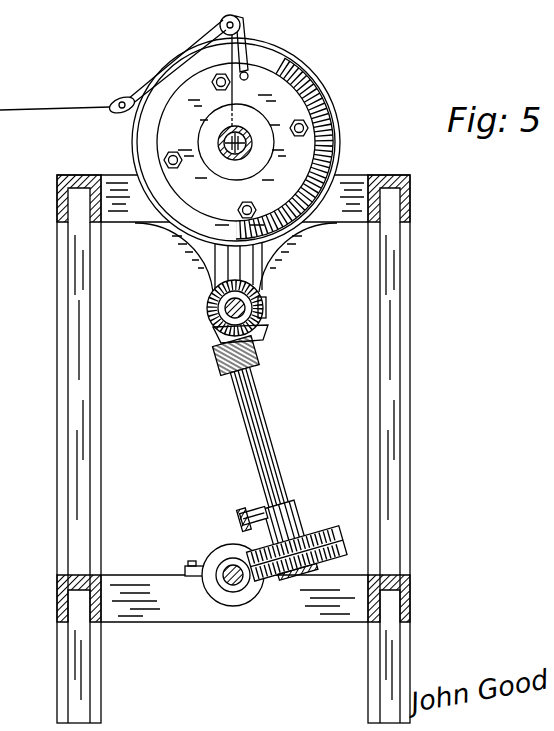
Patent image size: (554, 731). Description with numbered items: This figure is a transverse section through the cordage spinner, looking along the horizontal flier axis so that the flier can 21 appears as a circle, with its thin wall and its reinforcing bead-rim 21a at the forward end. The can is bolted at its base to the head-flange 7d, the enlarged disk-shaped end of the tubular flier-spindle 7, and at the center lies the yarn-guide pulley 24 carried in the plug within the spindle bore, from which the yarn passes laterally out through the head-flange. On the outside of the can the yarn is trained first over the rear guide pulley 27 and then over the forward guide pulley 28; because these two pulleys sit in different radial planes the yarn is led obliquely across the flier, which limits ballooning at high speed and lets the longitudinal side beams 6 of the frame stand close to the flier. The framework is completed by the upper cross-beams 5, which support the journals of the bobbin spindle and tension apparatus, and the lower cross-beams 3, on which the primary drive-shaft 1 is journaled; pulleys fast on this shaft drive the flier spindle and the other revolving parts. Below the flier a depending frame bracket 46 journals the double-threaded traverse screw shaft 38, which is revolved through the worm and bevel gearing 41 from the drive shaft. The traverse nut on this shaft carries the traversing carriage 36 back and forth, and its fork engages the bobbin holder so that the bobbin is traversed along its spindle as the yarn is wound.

The primary drive-shaft 1 is at (235, 585).
The lower cross-beams 3 is at (320, 615).
The upper cross-beams 5 is at (345, 222).
The longitudinal beams 6 is at (57, 199).
The flier-spindle 7 is at (236, 166).
The head-flange 7d is at (305, 163).
The flier can 21 is at (334, 134).
The bead-rim 21a is at (303, 74).
The yarn-guide pulley 24 is at (220, 141).
The rear guide pulley 27 is at (240, 28).
The forward guide pulley 28 is at (111, 106).
The traversing carriage 36 is at (222, 280).
The traverse screw shaft 38 is at (263, 305).
The worm and bevel gearing 41 is at (266, 403).
The depending frame bracket 46 is at (218, 260).